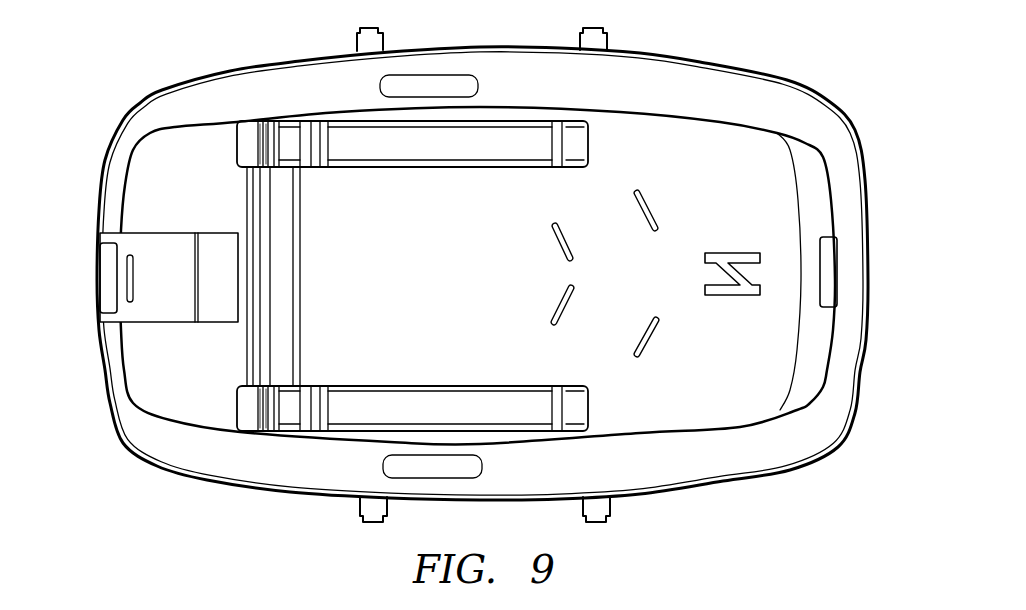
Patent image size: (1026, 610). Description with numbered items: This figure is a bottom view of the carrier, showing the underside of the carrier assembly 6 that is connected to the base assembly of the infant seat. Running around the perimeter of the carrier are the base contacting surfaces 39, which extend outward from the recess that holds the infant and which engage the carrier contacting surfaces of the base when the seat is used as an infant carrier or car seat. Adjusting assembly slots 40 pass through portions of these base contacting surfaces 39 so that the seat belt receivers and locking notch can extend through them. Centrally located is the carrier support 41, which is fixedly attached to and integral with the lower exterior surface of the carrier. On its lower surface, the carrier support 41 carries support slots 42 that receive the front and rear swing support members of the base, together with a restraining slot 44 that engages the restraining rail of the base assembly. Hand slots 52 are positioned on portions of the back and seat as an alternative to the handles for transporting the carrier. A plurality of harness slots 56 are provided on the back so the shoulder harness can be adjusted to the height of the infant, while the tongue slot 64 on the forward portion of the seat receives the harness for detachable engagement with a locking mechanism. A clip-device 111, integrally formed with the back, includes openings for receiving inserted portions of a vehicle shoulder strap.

The carrier assembly 6 is at (779, 52).
The base contacting surfaces 39 is at (704, 478).
The adjusting assembly slots 40 is at (424, 74).
The carrier support 41 is at (391, 168).
The support slots 42 is at (320, 128).
The restraining slot 44 is at (267, 122).
The hand slots 52 is at (104, 279).
The harness slots 56 is at (647, 222).
The tongue slot 64 is at (135, 273).
The clip-device 111 is at (734, 253).